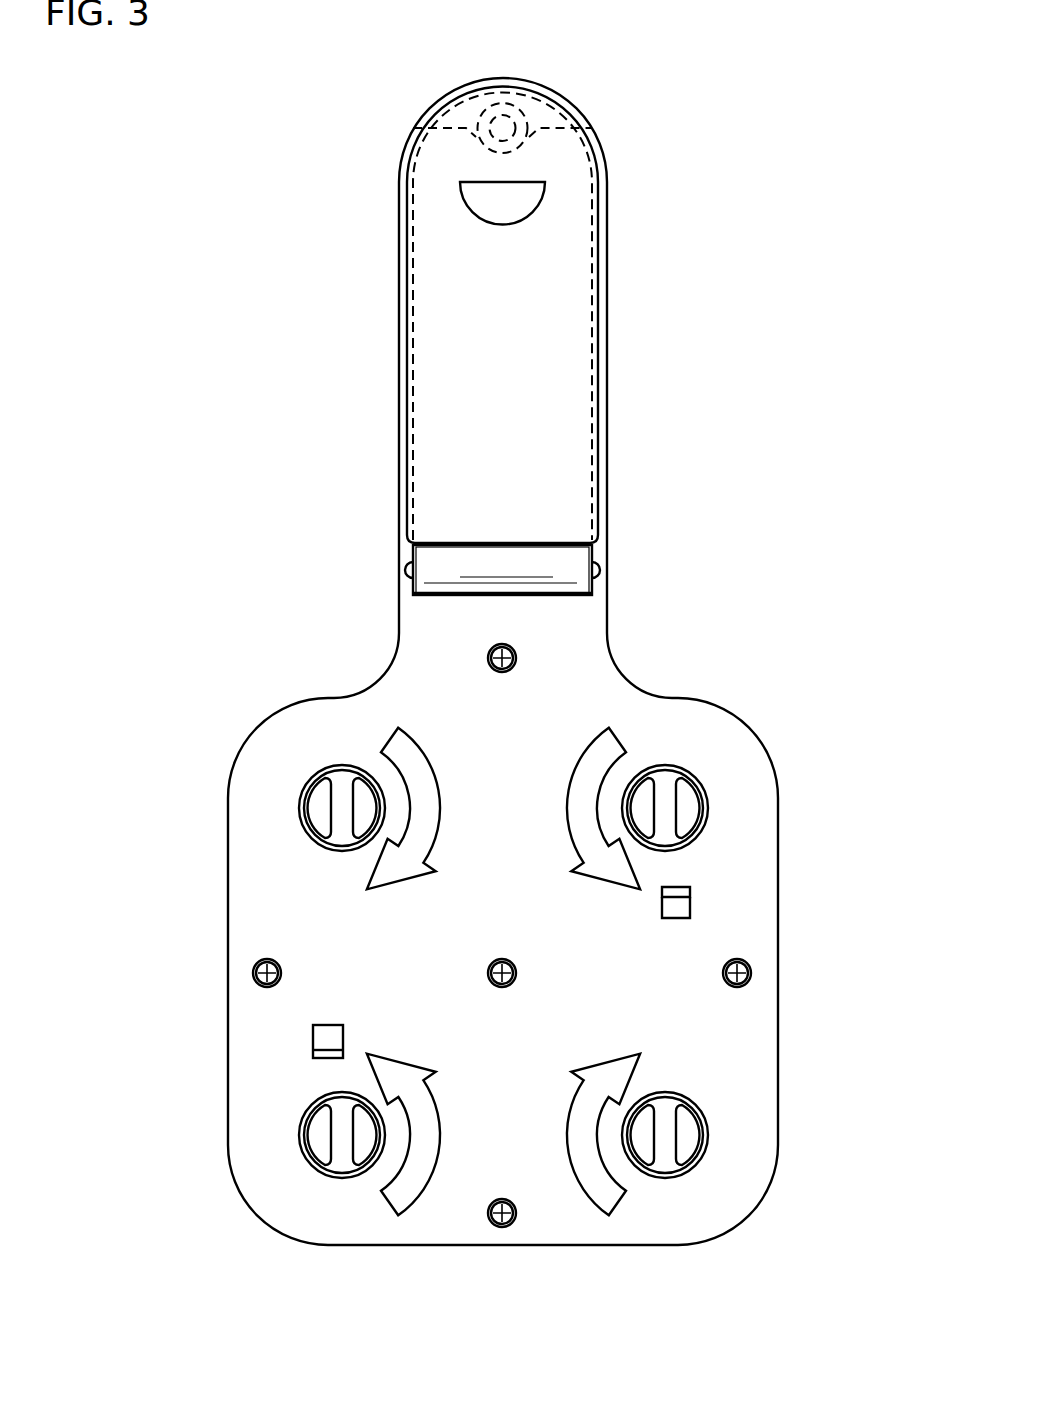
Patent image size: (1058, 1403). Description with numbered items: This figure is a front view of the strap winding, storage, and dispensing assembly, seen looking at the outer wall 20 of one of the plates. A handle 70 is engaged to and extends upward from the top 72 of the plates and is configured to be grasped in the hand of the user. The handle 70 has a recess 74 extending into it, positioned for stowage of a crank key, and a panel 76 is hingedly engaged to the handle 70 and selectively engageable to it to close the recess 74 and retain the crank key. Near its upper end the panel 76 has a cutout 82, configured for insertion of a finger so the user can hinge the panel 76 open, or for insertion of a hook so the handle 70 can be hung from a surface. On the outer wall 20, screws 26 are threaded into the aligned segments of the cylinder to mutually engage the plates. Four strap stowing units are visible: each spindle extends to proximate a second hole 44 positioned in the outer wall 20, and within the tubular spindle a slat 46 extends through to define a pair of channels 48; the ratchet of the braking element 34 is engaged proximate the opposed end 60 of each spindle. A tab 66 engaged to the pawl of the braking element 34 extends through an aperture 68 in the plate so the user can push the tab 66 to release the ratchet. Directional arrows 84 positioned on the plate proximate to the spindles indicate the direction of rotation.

The outer wall 20 is at (250, 1022).
The screw 26 is at (517, 655).
The braking element 34 is at (723, 803).
The second holes 44 is at (317, 804).
The slat 46 is at (668, 1155).
The channels 48 is at (639, 1134).
The opposed end 60 is at (684, 1149).
The tab 66 is at (687, 885).
The aperture 68 is at (681, 912).
The handle 70 is at (607, 430).
The top 72 is at (365, 684).
The recess 74 is at (520, 348).
The panel 76 is at (535, 294).
The cutout 82 is at (516, 205).
The directional arrows 84 is at (608, 752).